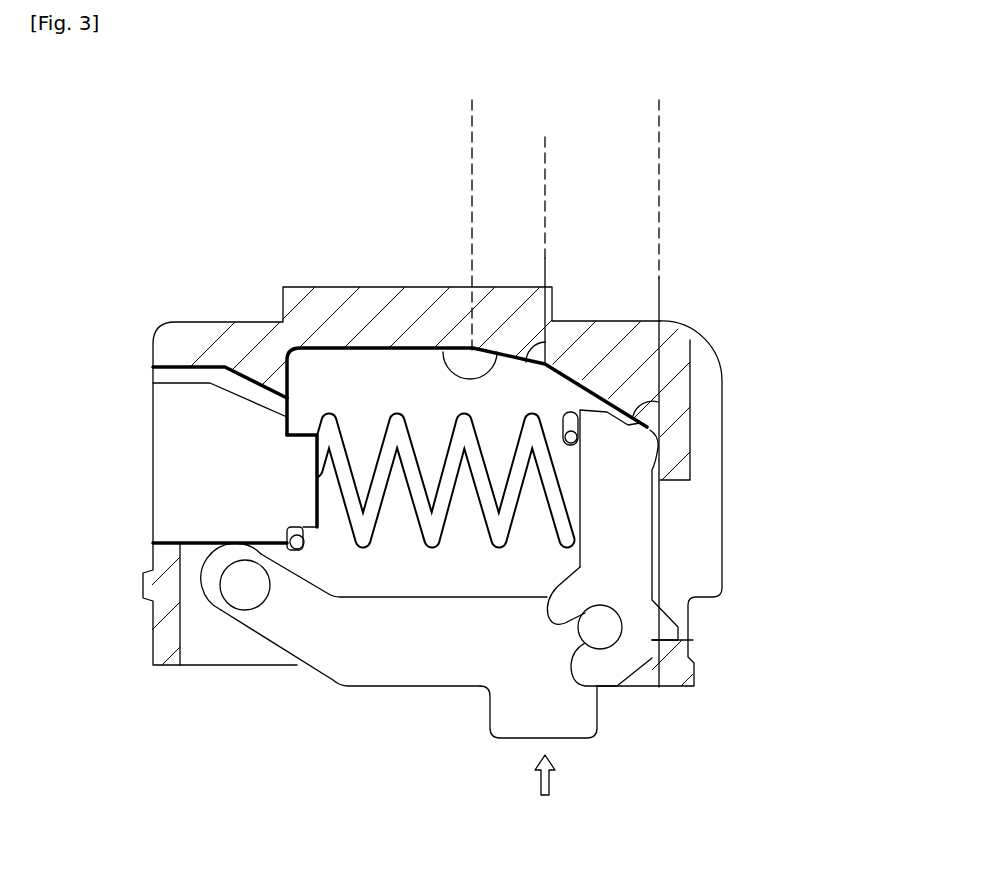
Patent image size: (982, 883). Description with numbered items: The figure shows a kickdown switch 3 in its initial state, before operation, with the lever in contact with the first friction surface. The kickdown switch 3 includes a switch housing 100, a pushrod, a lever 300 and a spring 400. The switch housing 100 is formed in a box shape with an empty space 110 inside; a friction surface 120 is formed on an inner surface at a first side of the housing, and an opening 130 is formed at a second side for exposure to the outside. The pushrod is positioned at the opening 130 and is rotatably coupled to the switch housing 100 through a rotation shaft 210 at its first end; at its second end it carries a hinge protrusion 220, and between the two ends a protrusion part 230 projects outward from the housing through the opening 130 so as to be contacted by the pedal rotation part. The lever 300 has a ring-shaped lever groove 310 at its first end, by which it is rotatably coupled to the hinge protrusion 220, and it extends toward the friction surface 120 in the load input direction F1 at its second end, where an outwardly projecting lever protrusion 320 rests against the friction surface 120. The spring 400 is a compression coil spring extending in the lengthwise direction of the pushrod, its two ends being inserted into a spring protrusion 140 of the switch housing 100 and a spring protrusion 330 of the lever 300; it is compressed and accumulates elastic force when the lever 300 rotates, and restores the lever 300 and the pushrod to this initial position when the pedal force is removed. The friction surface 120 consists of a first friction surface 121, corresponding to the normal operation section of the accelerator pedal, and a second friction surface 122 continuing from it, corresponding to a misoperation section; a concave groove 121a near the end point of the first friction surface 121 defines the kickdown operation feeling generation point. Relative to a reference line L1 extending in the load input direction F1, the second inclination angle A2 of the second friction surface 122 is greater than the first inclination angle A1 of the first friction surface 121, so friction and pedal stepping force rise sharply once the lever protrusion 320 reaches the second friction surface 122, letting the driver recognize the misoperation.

The kickdown switch 3 is at (712, 345).
The switch housing 100 is at (213, 337).
The empty space 110 is at (364, 385).
The friction surface 120 is at (659, 106).
The first friction surface 121 is at (659, 167).
The concave groove 121a is at (562, 362).
The second friction surface 122 is at (545, 167).
The opening 130 is at (217, 650).
The spring protrusion 140 is at (312, 500).
The rotation shaft 210 is at (228, 585).
The hinge protrusion 220 is at (602, 618).
The protrusion part 230 is at (582, 730).
The lever 300 is at (627, 543).
The lever groove 310 is at (605, 628).
The lever protrusion 320 is at (548, 437).
The spring protrusion 330 is at (533, 473).
The spring 400 is at (397, 417).
The reference line L1 is at (545, 258).
The first inclination angle A1 is at (637, 396).
The second inclination angle A2 is at (520, 342).
The load input direction F1 is at (544, 790).